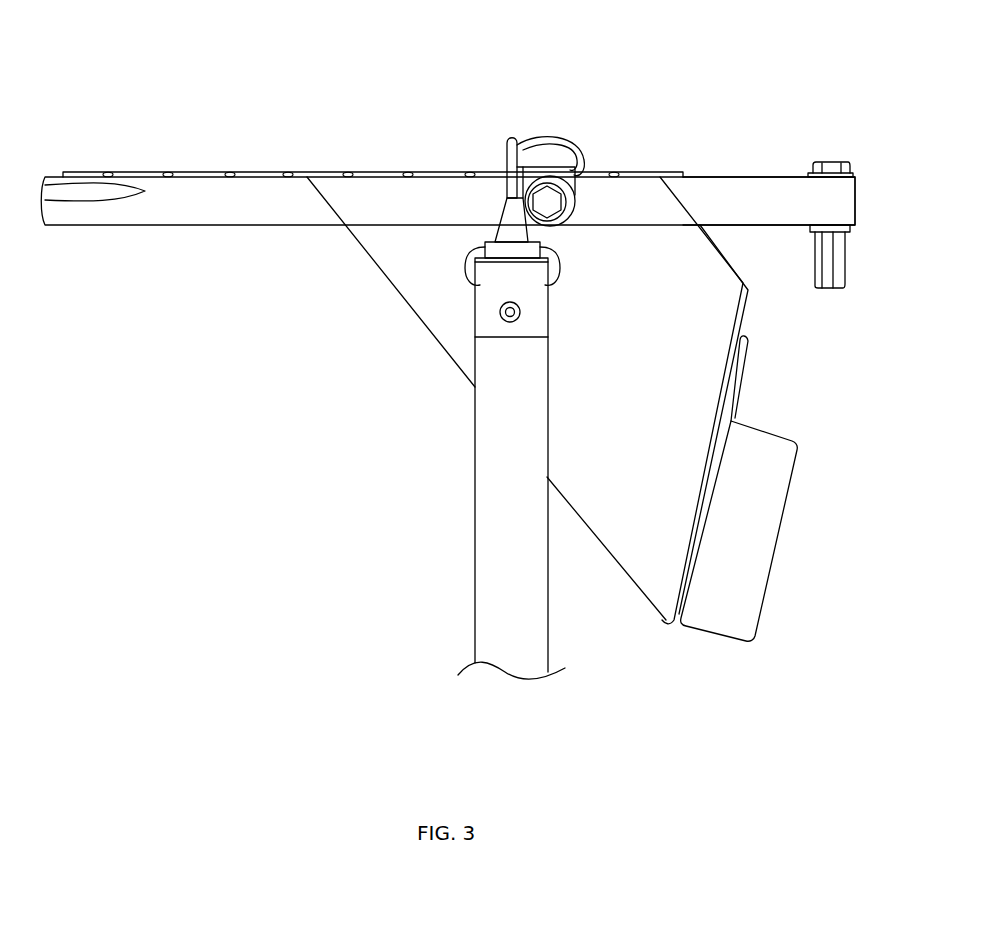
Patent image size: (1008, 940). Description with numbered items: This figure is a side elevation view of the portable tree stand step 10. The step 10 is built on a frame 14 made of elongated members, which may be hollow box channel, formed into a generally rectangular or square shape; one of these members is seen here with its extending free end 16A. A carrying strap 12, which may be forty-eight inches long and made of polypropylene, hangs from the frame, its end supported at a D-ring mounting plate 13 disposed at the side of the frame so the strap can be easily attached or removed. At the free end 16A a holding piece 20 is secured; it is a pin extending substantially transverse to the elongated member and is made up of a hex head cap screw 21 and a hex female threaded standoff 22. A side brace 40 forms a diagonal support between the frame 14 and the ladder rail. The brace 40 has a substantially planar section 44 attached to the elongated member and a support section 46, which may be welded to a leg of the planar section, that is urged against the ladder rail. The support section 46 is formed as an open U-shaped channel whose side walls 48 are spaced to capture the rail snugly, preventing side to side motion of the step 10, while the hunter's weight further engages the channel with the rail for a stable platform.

The step 10 is at (296, 118).
The strap 12 is at (483, 494).
The D-ring mounting plate 13 is at (558, 128).
The frame 14 is at (190, 200).
The free end 16A is at (748, 195).
The holding piece 20 is at (862, 250).
The cap screw 21 is at (830, 160).
The standoff 22 is at (822, 265).
The side brace 40 is at (647, 400).
The planar section 44 is at (413, 263).
The support section 46 is at (739, 531).
The side wall 48 is at (768, 442).